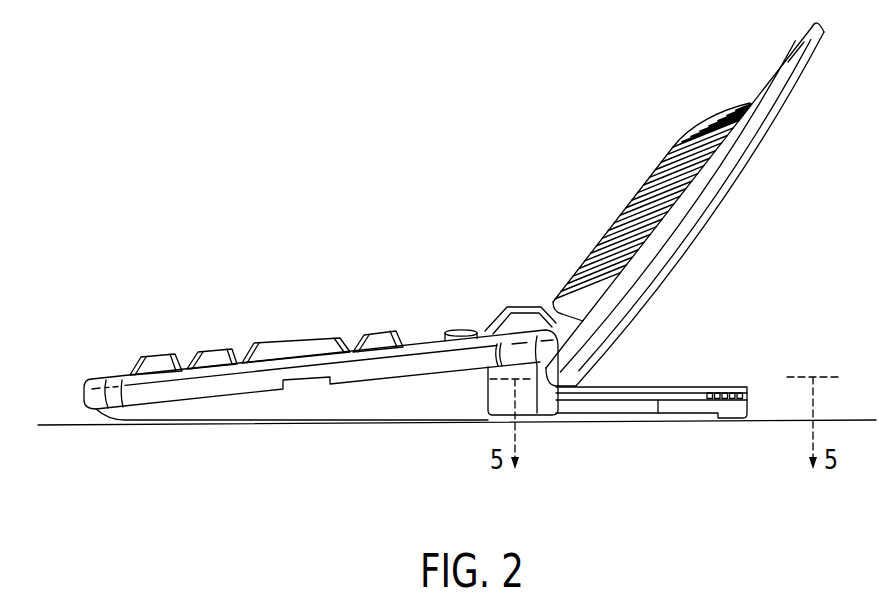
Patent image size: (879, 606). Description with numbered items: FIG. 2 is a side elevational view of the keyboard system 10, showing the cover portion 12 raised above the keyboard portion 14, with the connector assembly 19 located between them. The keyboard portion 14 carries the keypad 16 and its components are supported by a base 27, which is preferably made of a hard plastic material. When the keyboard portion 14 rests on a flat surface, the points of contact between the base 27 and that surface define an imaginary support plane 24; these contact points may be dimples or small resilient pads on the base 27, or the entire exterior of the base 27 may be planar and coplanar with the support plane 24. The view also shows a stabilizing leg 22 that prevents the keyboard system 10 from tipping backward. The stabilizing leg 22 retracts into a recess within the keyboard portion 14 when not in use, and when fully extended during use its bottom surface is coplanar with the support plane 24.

The keyboard system 10 is at (316, 192).
The cover portion 12 is at (792, 100).
The keyboard portion 14 is at (145, 335).
The keypad 16 is at (290, 339).
The connector assembly 19 is at (510, 314).
The stabilizing leg 22 is at (699, 387).
The support plane 24 is at (72, 424).
The base 27 is at (372, 398).